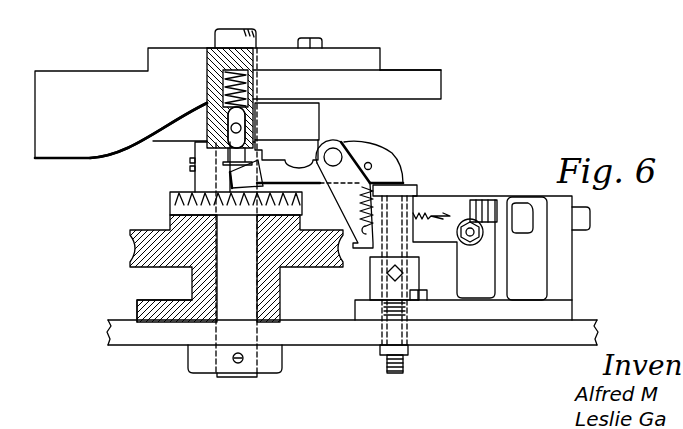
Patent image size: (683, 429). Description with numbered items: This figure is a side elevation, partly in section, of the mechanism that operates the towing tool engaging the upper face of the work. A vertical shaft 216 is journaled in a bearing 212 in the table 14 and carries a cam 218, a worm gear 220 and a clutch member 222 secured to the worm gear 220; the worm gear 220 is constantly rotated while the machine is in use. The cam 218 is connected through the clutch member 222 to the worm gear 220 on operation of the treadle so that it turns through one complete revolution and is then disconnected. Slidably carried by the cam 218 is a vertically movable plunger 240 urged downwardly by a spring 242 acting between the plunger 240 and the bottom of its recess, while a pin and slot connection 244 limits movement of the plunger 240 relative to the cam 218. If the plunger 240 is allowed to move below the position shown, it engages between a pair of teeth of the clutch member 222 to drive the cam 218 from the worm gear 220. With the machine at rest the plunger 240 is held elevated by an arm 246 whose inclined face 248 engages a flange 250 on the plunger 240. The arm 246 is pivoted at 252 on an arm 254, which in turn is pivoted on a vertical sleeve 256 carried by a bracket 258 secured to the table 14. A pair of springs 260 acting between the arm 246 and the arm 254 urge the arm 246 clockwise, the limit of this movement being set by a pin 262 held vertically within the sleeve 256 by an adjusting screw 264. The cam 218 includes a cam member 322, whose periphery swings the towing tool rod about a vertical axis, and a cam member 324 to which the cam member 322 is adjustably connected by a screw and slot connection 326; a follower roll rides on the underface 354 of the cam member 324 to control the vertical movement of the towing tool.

The table 14 is at (568, 335).
The bearing 212 is at (137, 312).
The vertical shaft 216 is at (245, 302).
The cam 218 is at (60, 50).
The worm gear 220 is at (137, 231).
The clutch member 222 is at (170, 197).
The plunger 240 is at (255, 108).
The spring 242 is at (253, 72).
The pin and slot connection 244 is at (240, 128).
The arm 246 is at (372, 150).
The inclined face 248 is at (245, 182).
The flange 250 is at (222, 165).
The pivot 252 is at (337, 150).
The arm 254 is at (450, 196).
The vertical sleeve 256 is at (352, 262).
The bracket 258 is at (496, 313).
The springs 260 is at (372, 166).
The pin 262 is at (369, 262).
The adjusting screw 264 is at (398, 374).
The cam member 322 is at (381, 52).
The cam member 324 is at (441, 83).
The screw and slot connection 326 is at (318, 40).
The underface 354 is at (80, 160).